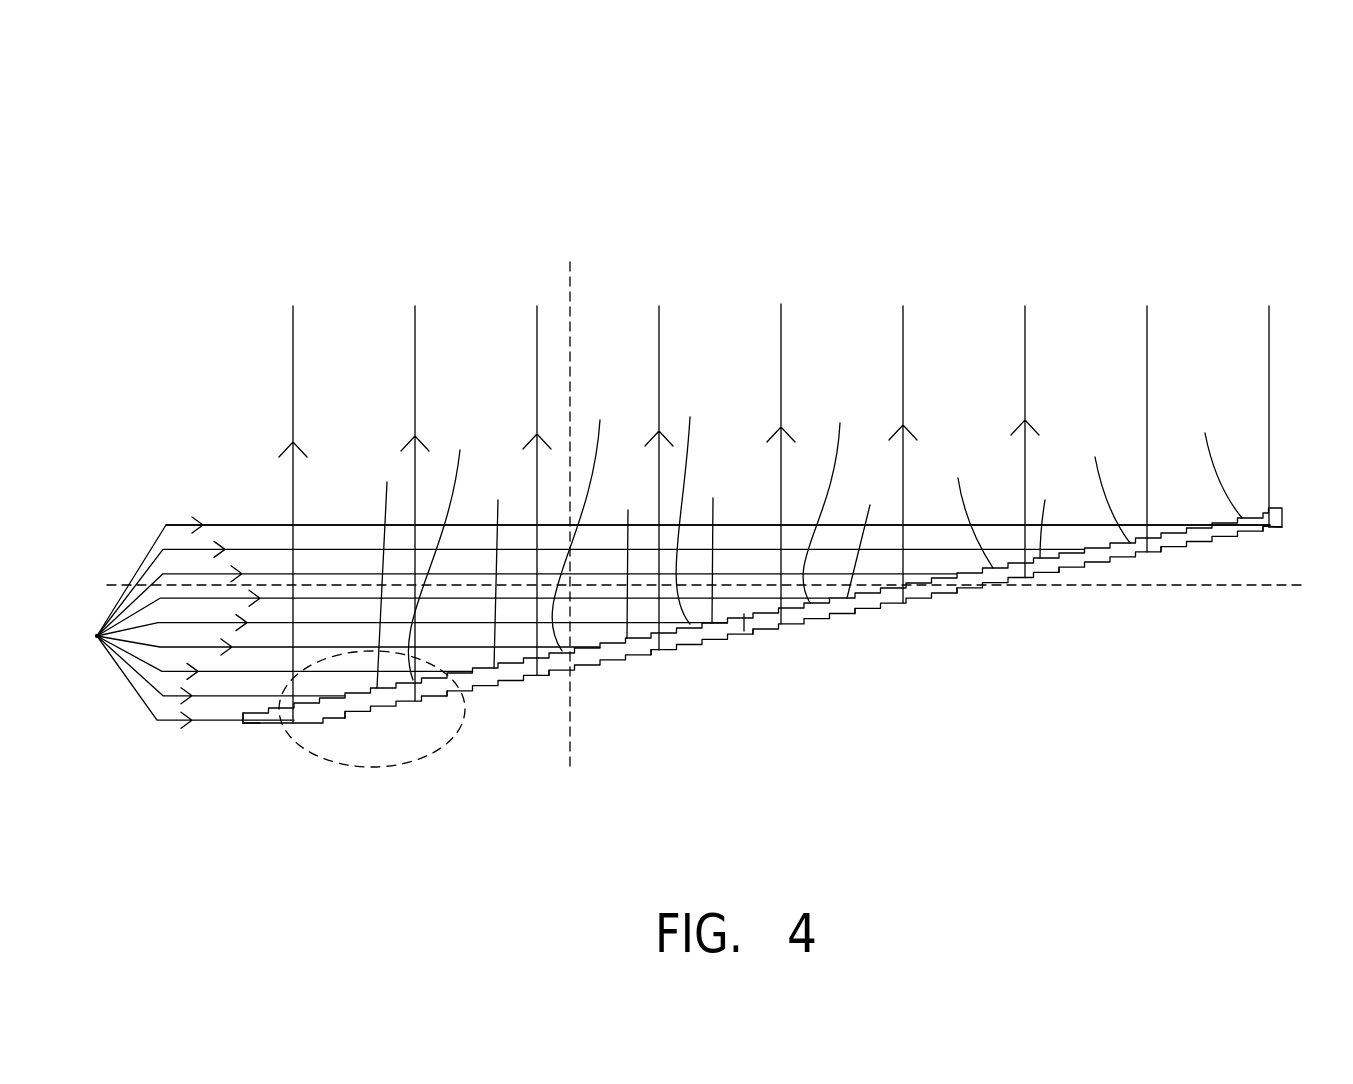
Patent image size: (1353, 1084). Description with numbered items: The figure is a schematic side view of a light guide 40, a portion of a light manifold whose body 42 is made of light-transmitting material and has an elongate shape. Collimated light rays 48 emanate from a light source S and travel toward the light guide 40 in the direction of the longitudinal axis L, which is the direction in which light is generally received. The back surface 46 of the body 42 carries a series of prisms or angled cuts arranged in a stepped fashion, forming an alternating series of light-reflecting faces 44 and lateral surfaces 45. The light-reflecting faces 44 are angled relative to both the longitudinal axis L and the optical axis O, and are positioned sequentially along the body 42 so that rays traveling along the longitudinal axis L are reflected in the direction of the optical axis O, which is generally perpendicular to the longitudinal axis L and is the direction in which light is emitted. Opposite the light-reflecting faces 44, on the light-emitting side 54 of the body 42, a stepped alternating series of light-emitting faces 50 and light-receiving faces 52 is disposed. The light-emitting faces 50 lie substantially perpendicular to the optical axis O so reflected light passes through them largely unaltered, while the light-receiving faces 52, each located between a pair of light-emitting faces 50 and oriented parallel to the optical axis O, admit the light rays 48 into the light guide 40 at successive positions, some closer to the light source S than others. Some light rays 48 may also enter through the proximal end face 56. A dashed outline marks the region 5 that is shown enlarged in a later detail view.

The light guide 40 is at (352, 197).
The body 42 is at (762, 529).
The light-reflecting faces 44 is at (372, 706).
The lateral surfaces 45 is at (492, 685).
The back surface 46 is at (744, 650).
The light rays 48 is at (293, 352).
The light-emitting faces 50 is at (724, 570).
The light-receiving faces 52 is at (825, 532).
The light-emitting side 54 is at (746, 598).
The proximal end face 56 is at (242, 720).
The detail region shown in FIG. 5 is at (372, 768).
The light source S is at (92, 657).
The longitudinal axis L is at (704, 569).
The optical axis O is at (569, 500).